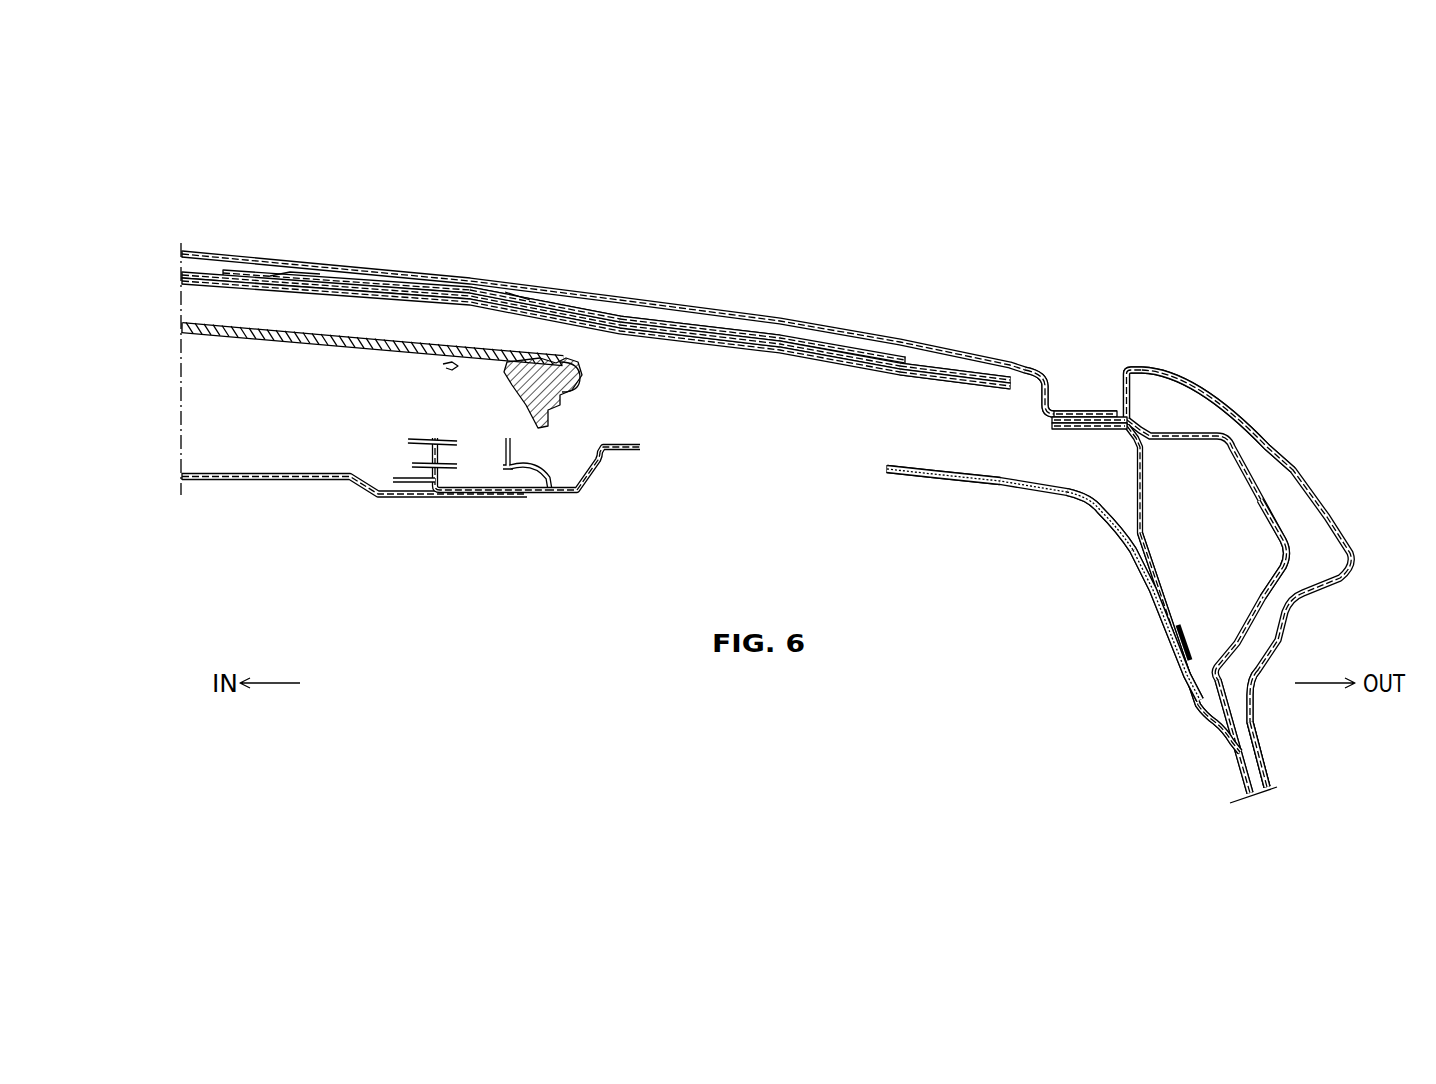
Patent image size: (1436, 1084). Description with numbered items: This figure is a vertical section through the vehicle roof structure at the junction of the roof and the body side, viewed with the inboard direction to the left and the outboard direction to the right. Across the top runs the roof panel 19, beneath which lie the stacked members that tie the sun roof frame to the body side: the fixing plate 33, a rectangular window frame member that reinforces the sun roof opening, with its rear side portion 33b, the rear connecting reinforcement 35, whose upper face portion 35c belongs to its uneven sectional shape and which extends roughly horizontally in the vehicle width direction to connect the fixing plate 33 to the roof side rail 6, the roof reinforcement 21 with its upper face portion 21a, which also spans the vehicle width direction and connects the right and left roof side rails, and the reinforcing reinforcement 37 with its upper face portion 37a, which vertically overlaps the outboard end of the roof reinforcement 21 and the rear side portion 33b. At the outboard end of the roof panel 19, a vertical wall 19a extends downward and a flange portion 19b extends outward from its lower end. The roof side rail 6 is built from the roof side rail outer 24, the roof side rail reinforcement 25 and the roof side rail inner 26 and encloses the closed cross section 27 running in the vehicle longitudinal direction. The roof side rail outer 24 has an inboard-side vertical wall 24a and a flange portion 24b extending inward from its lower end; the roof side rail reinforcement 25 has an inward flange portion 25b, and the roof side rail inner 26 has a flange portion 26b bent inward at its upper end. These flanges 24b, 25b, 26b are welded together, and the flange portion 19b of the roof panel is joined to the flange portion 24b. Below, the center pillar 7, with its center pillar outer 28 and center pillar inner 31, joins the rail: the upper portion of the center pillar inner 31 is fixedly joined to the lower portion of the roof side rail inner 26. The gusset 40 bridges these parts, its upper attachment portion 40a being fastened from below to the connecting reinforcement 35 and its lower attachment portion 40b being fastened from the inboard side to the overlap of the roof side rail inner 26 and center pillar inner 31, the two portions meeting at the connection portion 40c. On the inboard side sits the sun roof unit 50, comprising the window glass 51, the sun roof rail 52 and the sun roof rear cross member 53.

The roof side rail 6 is at (1252, 403).
The center pillar 7 is at (1266, 747).
The roof panel 19 is at (731, 300).
The vertical wall 19a is at (1047, 375).
The flange portion 19b is at (1078, 411).
The roof reinforcement 21 is at (934, 357).
The upper face portion 21a is at (550, 308).
The roof side rail outer 24 is at (1298, 468).
The inboard-side vertical wall 24a is at (1133, 378).
The flange portion 24b is at (1062, 431).
The roof side rail reinforcement 25 is at (1197, 432).
The flange portion 25b is at (1080, 428).
The roof side rail inner 26 is at (1146, 497).
The flange portion 26b is at (1105, 450).
The closed cross section 27 is at (1223, 545).
The center pillar outer 28 is at (1272, 773).
The center pillar inner 31 is at (1243, 772).
The fixing plate 33 is at (206, 261).
The rear side portion 33b is at (352, 272).
The rear connecting reinforcement 35 is at (912, 392).
The upper face portion 35c is at (750, 352).
The reinforcing reinforcement 37 is at (785, 326).
The upper face portion 37a is at (828, 344).
The gusset 40 is at (990, 491).
The upper attachment portion 40a is at (913, 474).
The lower attachment portion 40b is at (1172, 640).
The connection portion 40c is at (1100, 507).
The sun roof unit 50 is at (637, 477).
The window glass 51 is at (225, 336).
The sun roof rail 52 is at (570, 493).
The sun roof rear cross member 53 is at (272, 481).